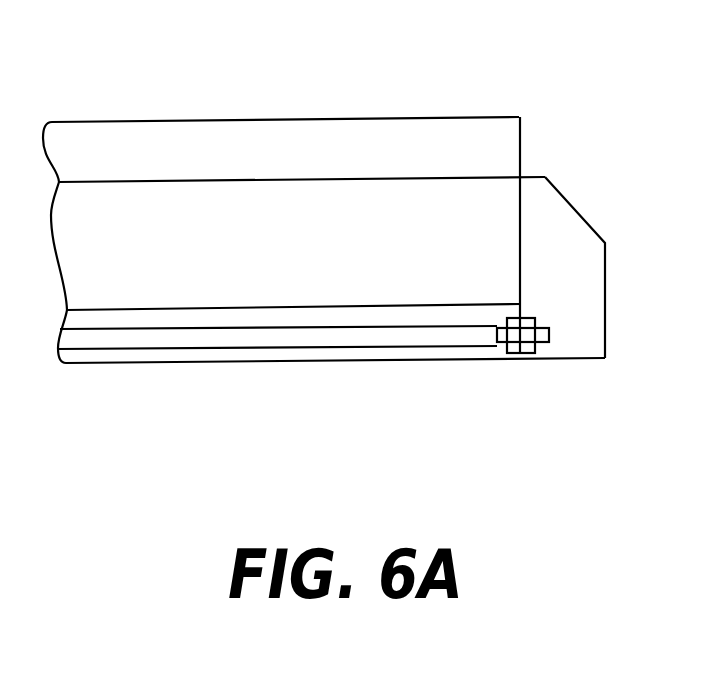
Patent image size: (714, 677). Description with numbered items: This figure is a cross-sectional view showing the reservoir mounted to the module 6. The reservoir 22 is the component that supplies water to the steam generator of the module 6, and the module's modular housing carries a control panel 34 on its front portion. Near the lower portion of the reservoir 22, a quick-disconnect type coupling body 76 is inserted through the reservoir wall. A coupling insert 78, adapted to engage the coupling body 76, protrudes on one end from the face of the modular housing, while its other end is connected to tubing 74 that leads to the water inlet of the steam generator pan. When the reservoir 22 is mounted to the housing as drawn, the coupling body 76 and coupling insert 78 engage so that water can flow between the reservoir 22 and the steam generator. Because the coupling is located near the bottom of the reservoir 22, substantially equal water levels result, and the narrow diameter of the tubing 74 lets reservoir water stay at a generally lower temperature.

The module 6 is at (477, 103).
The reservoir 22 is at (293, 202).
The control panel 34 is at (522, 155).
The tubing 74 is at (377, 335).
The coupling body 76 is at (533, 355).
The coupling insert 78 is at (505, 343).